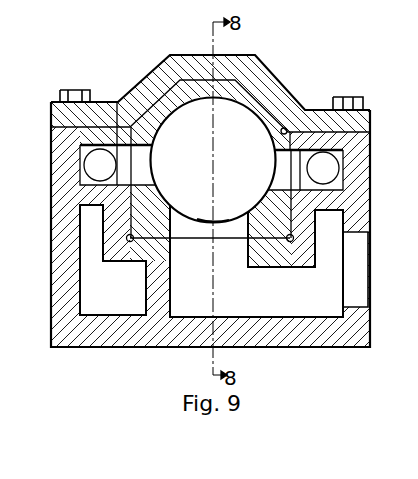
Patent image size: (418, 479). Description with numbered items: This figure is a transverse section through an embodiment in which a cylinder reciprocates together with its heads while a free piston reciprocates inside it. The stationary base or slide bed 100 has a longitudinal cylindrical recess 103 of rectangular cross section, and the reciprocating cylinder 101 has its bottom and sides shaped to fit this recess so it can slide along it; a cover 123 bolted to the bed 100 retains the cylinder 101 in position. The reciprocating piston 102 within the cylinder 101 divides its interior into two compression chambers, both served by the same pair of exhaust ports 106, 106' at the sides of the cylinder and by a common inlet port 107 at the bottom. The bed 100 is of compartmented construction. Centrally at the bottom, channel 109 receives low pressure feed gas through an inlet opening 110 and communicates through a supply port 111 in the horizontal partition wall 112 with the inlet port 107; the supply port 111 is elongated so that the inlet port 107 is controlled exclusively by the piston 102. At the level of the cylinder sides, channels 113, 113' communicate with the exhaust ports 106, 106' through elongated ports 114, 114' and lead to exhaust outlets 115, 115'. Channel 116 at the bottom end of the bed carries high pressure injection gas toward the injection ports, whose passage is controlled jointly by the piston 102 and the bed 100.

The stationary base or slide bed 100 is at (265, 337).
The reciprocating cylinder 101 is at (247, 98).
The reciprocating piston 102 is at (250, 136).
The longitudinal cylindrical recess 103 is at (285, 127).
The exhaust port 106 is at (155, 170).
The exhaust port 106' is at (262, 194).
The inlet port 107 is at (207, 203).
The channel 109 is at (286, 306).
The inlet opening 110 is at (360, 292).
The supply port 111 is at (234, 265).
The horizontal partition wall 112 is at (280, 256).
The channel 113 is at (85, 165).
The channel 113' is at (343, 174).
The port 114 is at (89, 82).
The port 114' is at (360, 87).
The exhaust outlet 115 is at (65, 159).
The exhaust outlet 115' is at (362, 163).
The channel 116 is at (108, 256).
The cover 123 is at (167, 68).